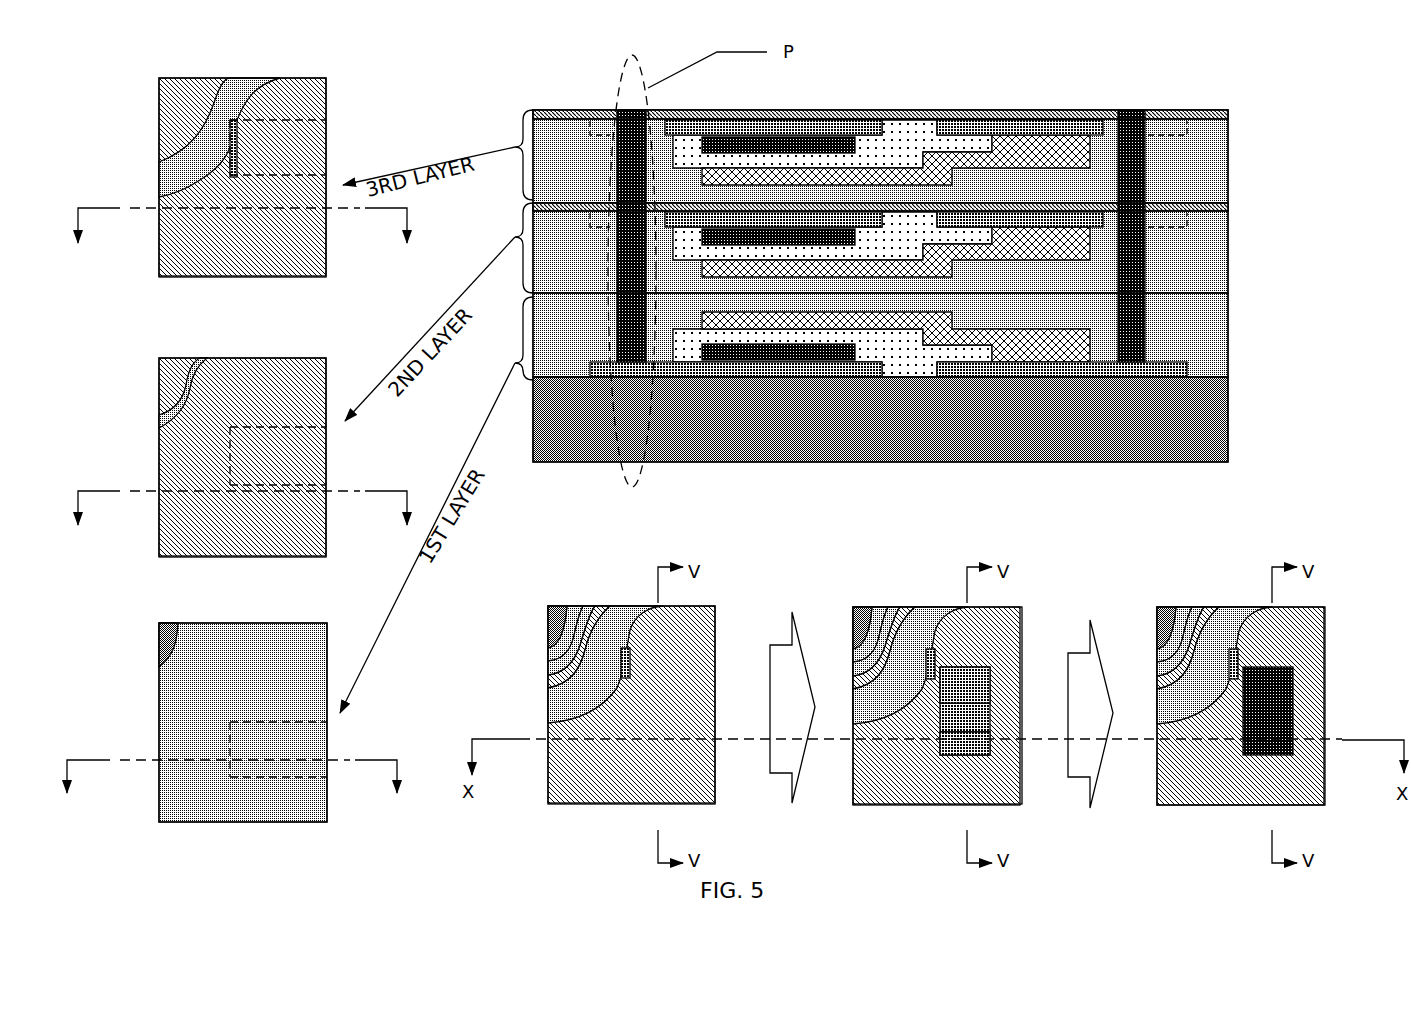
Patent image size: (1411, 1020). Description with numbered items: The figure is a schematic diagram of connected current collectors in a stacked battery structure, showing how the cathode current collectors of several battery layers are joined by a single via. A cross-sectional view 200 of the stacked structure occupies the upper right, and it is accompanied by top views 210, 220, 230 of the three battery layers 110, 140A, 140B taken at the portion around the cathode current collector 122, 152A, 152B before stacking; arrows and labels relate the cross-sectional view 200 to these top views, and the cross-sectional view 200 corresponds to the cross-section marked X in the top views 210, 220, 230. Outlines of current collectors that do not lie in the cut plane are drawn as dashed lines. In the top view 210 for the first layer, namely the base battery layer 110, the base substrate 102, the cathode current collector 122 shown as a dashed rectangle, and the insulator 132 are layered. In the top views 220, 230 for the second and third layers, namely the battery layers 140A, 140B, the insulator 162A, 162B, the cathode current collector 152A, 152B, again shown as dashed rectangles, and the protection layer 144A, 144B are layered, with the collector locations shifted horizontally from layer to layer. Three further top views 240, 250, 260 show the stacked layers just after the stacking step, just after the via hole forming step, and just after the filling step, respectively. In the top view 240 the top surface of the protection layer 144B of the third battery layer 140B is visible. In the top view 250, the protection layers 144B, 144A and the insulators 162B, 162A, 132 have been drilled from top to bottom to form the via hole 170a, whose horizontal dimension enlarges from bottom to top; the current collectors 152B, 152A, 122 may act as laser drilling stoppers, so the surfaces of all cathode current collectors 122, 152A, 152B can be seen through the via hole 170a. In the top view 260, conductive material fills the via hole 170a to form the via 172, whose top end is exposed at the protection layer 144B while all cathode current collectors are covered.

The cross-sectional view 200 is at (1302, 133).
The base substrate 102 is at (897, 431).
The base battery layer 110 is at (1243, 295).
The battery layer 140A is at (1243, 203).
The battery layer 140B is at (1243, 110).
The cathode current collector 122 is at (230, 750).
The insulator 132 is at (207, 816).
The protection layer 144A is at (220, 546).
The protection layer 144B is at (235, 256).
The cathode current collector 152A is at (230, 462).
The cathode current collector 152B is at (232, 143).
The insulator 162A is at (177, 400).
The insulator 162B is at (193, 120).
The via hole 170a is at (953, 757).
The via 172 is at (648, 142).
The top view 210 is at (105, 680).
The top view 220 is at (104, 385).
The top view 230 is at (104, 105).
The top view 240 is at (550, 577).
The top view 250 is at (852, 577).
The top view 260 is at (1153, 577).